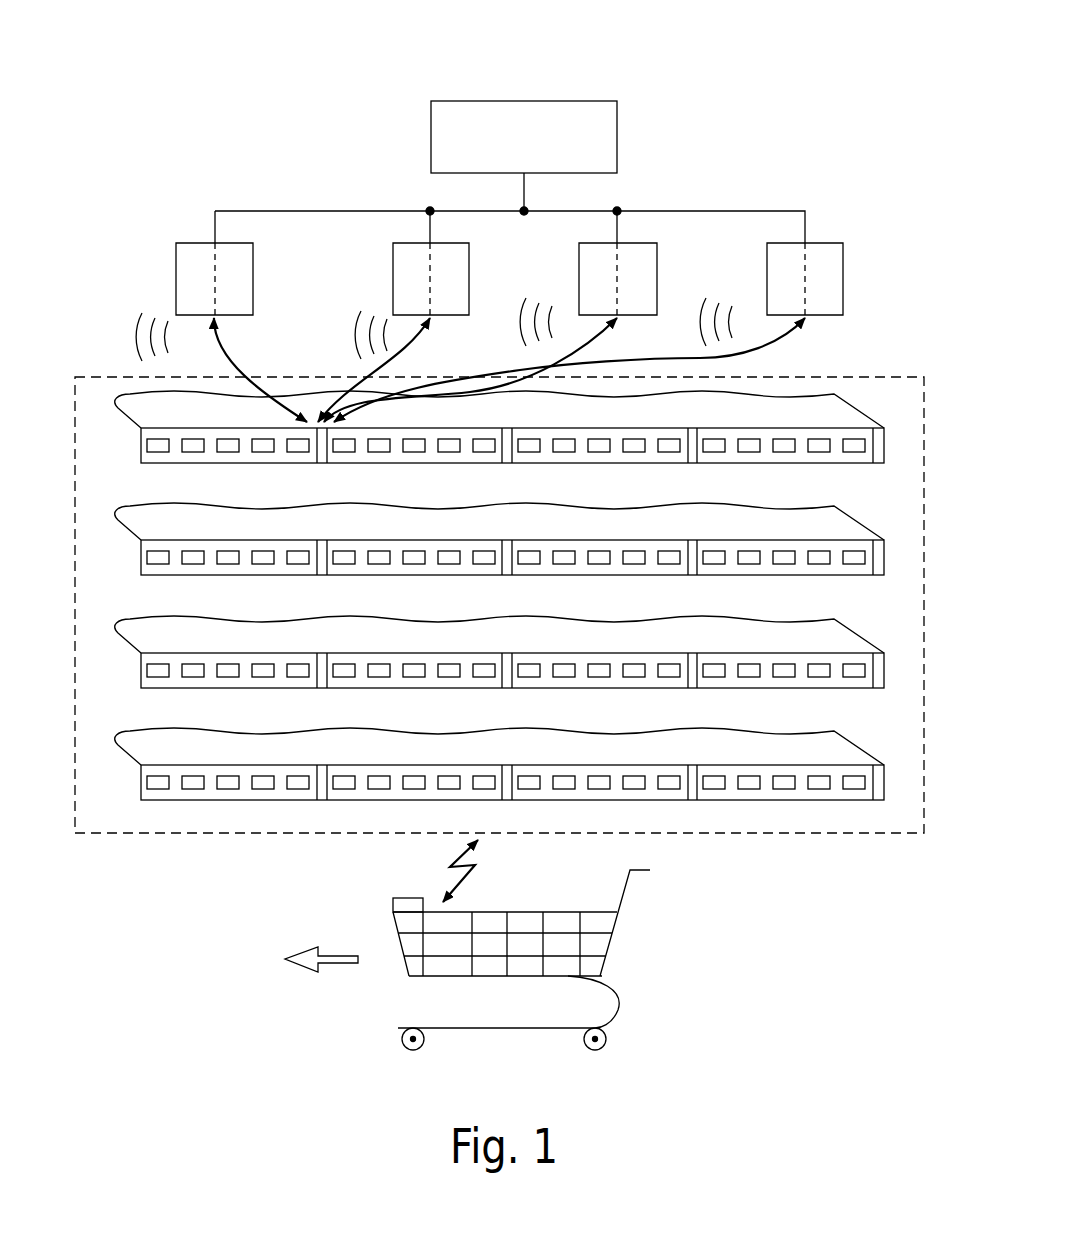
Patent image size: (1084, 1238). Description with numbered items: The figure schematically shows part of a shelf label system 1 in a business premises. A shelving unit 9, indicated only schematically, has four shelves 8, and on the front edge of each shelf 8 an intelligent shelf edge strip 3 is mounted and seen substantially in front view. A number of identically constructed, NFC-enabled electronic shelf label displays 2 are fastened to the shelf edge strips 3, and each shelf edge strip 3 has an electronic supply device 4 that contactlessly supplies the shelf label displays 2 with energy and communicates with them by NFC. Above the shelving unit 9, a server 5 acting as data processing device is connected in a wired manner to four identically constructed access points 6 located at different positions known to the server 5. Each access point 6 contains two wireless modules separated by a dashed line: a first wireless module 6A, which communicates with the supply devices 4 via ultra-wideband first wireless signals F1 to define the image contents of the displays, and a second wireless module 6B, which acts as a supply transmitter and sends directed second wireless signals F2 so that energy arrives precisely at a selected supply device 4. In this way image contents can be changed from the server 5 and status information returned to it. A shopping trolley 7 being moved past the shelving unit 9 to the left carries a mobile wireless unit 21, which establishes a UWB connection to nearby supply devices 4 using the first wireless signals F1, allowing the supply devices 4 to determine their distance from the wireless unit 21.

The shelf label system 1 is at (808, 72).
The electronic shelf label display 2 is at (506, 638).
The shelf edge strip 3 is at (141, 445).
The supply device 4 is at (322, 464).
The server 5 is at (588, 116).
The access point 6 is at (175, 242).
The first wireless module 6A is at (228, 250).
The second wireless module 6B is at (176, 262).
The shopping trolley 7 is at (627, 890).
The shelf 8 is at (128, 415).
The shelving unit 9 is at (141, 838).
The mobile wireless unit 21 is at (408, 900).
The first wireless signal F1 is at (243, 362).
The second wireless signal F2 is at (142, 360).